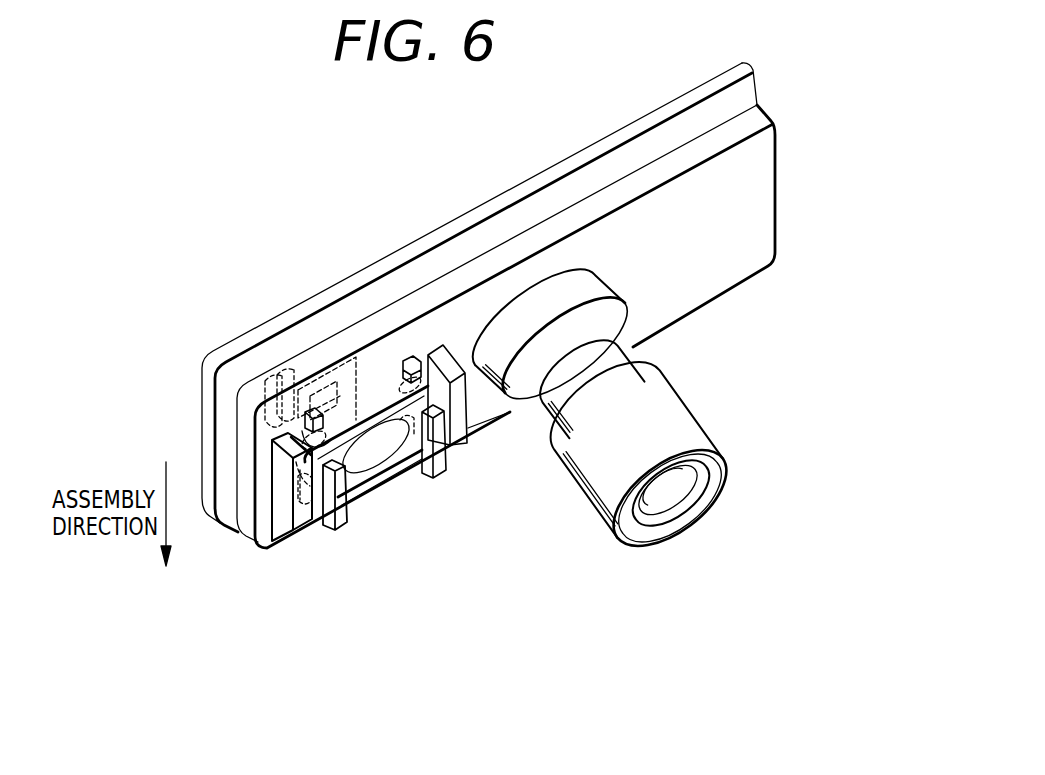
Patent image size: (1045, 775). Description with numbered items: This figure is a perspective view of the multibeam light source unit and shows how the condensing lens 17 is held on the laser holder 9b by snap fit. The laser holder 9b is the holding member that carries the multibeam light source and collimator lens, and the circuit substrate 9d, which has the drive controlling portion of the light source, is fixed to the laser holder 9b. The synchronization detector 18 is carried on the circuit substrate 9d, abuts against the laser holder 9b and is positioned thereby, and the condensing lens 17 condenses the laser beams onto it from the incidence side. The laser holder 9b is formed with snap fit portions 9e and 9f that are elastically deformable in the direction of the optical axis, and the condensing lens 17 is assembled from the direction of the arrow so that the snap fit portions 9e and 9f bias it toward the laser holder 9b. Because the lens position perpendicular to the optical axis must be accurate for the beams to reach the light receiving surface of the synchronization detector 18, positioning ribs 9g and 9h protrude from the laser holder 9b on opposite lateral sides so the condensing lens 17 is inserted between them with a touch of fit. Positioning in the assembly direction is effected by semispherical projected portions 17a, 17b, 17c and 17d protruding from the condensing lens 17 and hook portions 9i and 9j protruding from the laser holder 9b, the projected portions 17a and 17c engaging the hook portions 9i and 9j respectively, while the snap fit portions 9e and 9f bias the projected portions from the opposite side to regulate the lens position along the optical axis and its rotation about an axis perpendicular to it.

The laser holder 9b is at (757, 187).
The circuit substrate 9d is at (675, 128).
The snap fit portion 9e is at (350, 527).
The snap fit portion 9f is at (450, 470).
The positioning rib 9g is at (308, 524).
The positioning rib 9h is at (472, 428).
The hook portion 9i is at (285, 392).
The hook portion 9j is at (405, 358).
The condensing lens 17 is at (377, 458).
The projected portion 17a is at (300, 424).
The projected portion 17b is at (302, 483).
The projected portion 17c is at (430, 355).
The projected portion 17d is at (416, 485).
The synchronization detector 18 is at (325, 380).